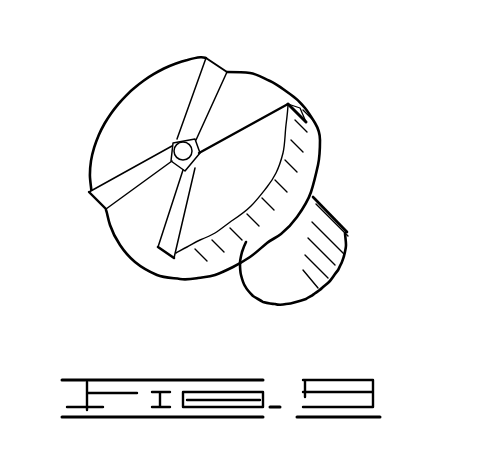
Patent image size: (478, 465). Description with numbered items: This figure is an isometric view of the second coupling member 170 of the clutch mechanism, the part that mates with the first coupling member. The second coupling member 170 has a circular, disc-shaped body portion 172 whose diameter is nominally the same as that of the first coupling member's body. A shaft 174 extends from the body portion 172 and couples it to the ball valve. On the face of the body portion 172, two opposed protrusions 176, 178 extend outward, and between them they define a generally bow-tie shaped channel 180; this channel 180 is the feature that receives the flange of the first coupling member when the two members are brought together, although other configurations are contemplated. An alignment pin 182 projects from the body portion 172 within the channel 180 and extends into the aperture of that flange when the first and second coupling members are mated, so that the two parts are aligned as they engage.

The second coupling member 170 is at (149, 46).
The body portion 172 is at (284, 148).
The shaft 174 is at (306, 270).
The protrusion 176 is at (125, 125).
The protrusion 178 is at (207, 240).
The channel 180 is at (139, 220).
The alignment pin 182 is at (196, 141).